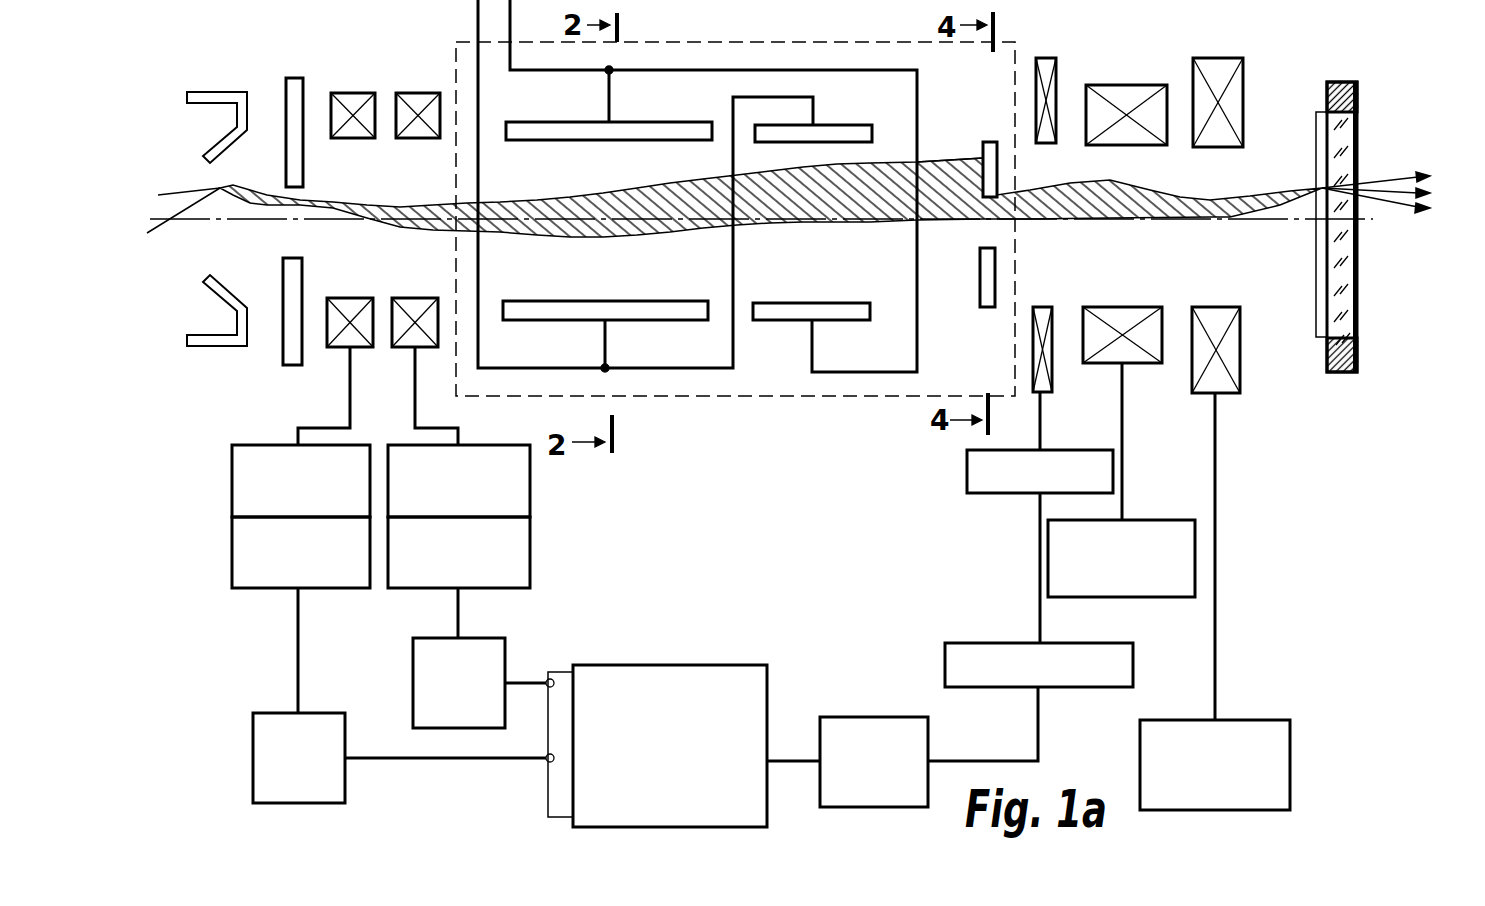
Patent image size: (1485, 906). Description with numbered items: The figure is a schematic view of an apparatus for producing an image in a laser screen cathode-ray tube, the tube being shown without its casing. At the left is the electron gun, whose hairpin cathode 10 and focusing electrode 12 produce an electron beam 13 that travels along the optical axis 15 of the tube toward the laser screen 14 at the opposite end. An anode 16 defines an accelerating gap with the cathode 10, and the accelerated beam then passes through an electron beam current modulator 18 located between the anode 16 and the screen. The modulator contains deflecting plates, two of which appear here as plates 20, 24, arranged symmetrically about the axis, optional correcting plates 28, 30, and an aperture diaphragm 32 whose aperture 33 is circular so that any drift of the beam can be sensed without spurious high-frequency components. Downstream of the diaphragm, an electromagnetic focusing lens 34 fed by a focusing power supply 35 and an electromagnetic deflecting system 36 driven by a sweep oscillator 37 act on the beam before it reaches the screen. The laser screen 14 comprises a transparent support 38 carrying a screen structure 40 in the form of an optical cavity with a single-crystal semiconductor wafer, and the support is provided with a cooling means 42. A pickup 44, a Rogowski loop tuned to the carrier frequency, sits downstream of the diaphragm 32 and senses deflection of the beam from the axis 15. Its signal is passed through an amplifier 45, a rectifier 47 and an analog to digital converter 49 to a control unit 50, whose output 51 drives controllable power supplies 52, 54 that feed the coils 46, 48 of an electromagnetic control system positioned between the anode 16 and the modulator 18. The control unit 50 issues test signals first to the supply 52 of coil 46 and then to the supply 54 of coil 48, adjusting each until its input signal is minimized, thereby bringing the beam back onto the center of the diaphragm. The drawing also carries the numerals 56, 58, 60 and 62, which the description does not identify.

The hairpin cathode 10 is at (172, 207).
The focusing electrode 12 is at (213, 343).
The electron beam 13 is at (967, 197).
The laser screen 14 is at (1350, 194).
The optical axis 15 is at (1262, 230).
The anode 16 is at (287, 83).
The electron beam current modulator 18 is at (693, 42).
The deflecting plate 20 is at (556, 122).
The deflecting plate 24 is at (527, 322).
The correcting plate 28 is at (853, 125).
The correcting plate 30 is at (833, 323).
The aperture diaphragm 32 is at (988, 140).
The aperture 33 is at (988, 230).
The electromagnetic focusing lens 34 is at (1128, 85).
The focusing power supply 35 is at (1168, 520).
The electromagnetic deflecting system 36 is at (1217, 58).
The sweep oscillator 37 is at (1290, 760).
The transparent support 38 is at (1358, 123).
The screen structure 40 is at (1318, 140).
The cooling means 42 is at (1344, 80).
The pickup 44 is at (1047, 58).
The amplifier 45 is at (967, 473).
The coil 46 is at (353, 93).
The rectifier 47 is at (975, 643).
The coil 48 is at (423, 93).
The analog to digital converter 49 is at (870, 717).
The control unit 50 is at (682, 665).
The output 51 is at (562, 672).
The controllable power supply 52 is at (232, 478).
The controllable power supply 54 is at (532, 483).
The first potentiometer 56 is at (232, 555).
The second potentiometer 58 is at (532, 555).
The first step motor 60 is at (253, 757).
The second step motor 62 is at (413, 680).